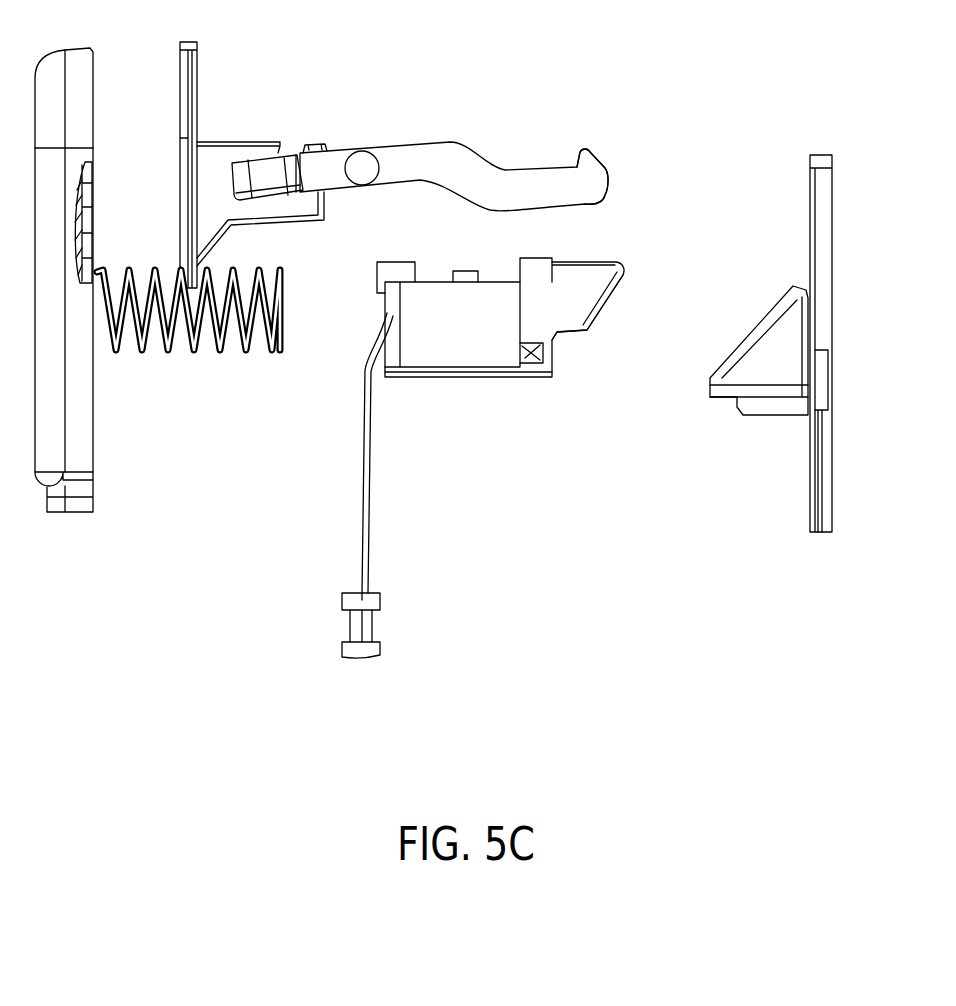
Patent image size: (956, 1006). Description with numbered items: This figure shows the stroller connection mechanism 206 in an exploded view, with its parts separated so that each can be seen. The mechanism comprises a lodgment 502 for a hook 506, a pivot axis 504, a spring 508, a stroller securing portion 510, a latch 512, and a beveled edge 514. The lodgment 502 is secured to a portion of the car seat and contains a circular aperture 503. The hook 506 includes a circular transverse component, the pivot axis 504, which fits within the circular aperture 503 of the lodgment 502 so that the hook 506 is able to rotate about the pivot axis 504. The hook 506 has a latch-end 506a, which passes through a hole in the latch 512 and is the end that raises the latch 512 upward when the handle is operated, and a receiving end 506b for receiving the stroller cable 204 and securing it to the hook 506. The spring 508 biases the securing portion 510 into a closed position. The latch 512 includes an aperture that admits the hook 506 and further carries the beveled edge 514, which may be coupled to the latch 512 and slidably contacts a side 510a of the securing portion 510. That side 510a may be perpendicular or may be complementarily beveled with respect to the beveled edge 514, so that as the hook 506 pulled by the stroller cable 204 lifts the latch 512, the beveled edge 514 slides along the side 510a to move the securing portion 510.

The stroller cable 204 is at (360, 540).
The stroller connection mechanism 206 is at (793, 603).
The lodgment 502 is at (213, 153).
The circular aperture 503 is at (297, 142).
The pivot axis 504 is at (362, 162).
The hook 506 is at (520, 195).
The latch-end 506a is at (597, 178).
The receiving end 506b is at (260, 180).
The spring 508 is at (186, 282).
The stroller securing portion 510 is at (452, 317).
The side 510a is at (562, 340).
The latch 512 is at (822, 262).
The beveled edge 514 is at (743, 352).